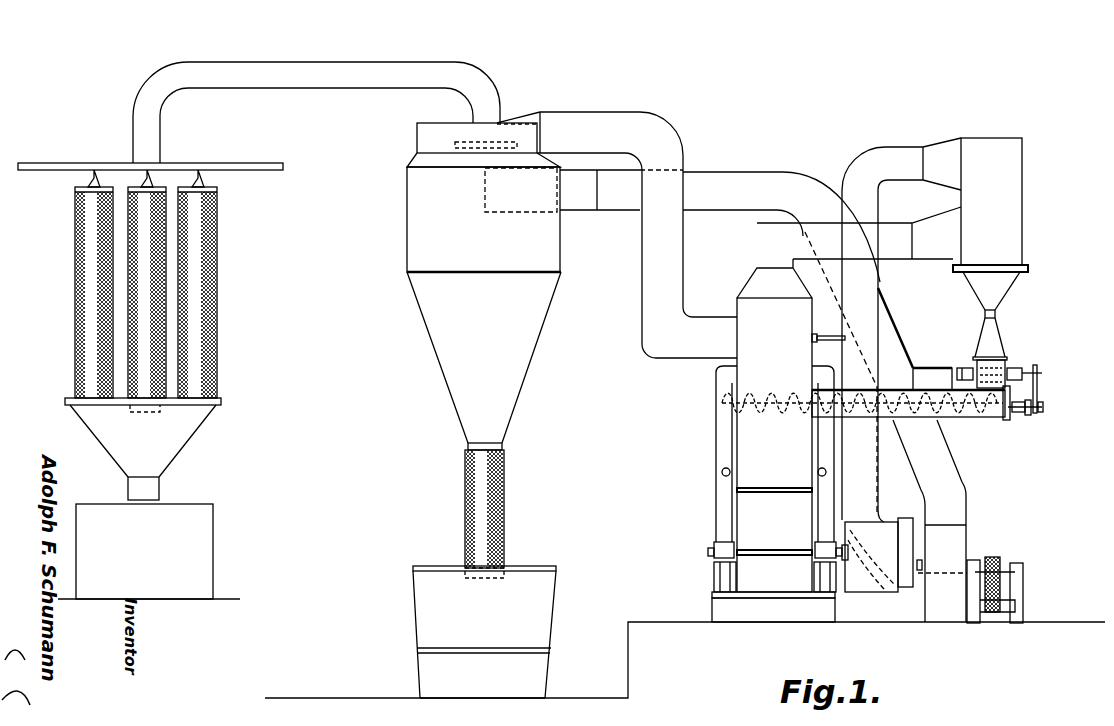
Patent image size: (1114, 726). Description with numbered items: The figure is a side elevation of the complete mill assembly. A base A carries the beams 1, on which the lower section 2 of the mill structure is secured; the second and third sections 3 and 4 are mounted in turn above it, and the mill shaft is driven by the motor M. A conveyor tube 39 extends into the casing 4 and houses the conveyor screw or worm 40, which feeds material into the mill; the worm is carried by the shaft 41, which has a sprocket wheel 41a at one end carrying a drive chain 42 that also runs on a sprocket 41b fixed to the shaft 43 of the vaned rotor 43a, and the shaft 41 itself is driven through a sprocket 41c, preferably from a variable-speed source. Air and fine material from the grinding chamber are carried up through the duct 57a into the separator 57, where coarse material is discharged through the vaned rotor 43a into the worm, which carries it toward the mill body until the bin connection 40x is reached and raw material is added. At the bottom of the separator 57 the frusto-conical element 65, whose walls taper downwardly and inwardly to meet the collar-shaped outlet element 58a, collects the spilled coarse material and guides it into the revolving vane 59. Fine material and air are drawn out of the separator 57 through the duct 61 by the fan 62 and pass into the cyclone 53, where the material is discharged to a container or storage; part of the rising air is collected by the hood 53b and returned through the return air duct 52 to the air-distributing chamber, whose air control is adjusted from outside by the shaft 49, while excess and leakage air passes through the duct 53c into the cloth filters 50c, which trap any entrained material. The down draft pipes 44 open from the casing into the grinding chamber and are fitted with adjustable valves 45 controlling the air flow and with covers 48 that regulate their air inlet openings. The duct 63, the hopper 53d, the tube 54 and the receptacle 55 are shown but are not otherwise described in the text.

The beams 1 is at (772, 612).
The lower section 2 is at (774, 571).
The second section 3 is at (774, 519).
The third section 4 is at (774, 378).
The conveyor tube 39 is at (925, 412).
The conveyor screw or worm 40 is at (888, 400).
The bin connection 40x is at (935, 395).
The shaft of the worm 41 is at (995, 415).
The sprocket wheel 41a is at (1040, 407).
The sprocket 41b is at (1040, 373).
The sprocket 41c is at (1030, 415).
The drive chain 42 is at (1037, 380).
The shaft of the vaned rotor 43 is at (1010, 362).
The vaned rotor 43a is at (975, 360).
The down draft pipes 44 is at (716, 437).
The vanes or valves 45 is at (716, 463).
The covers 48 is at (722, 473).
The shaft 49 is at (830, 335).
The cloth filters 50c is at (210, 282).
The return air duct 52 is at (658, 137).
The cyclone 53 is at (437, 295).
The hood 53b is at (430, 138).
The duct 53c is at (380, 72).
The filter hopper 53d is at (165, 439).
The discharge tube 54 is at (465, 479).
The receptacle 55 is at (430, 606).
The separator 57 is at (1010, 195).
The duct 57a is at (918, 247).
The collar-shaped outlet element 58a is at (998, 314).
The revolving vane 59 is at (976, 333).
The duct 61 is at (888, 157).
The fan 62 is at (950, 548).
The duct 63 is at (950, 483).
The frusto-conical shaped element 65 is at (735, 182).
The base A is at (678, 620).
The motor M is at (870, 585).